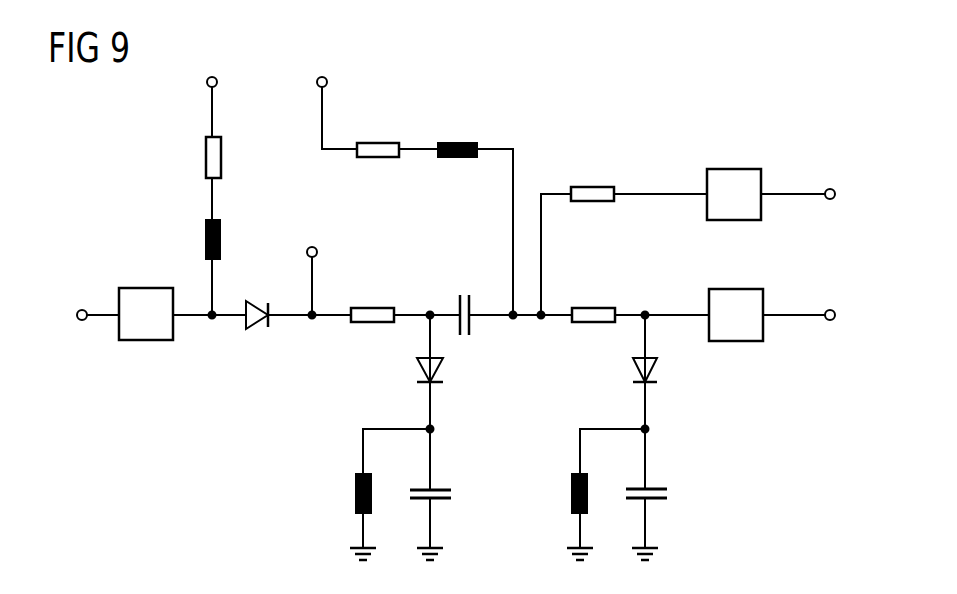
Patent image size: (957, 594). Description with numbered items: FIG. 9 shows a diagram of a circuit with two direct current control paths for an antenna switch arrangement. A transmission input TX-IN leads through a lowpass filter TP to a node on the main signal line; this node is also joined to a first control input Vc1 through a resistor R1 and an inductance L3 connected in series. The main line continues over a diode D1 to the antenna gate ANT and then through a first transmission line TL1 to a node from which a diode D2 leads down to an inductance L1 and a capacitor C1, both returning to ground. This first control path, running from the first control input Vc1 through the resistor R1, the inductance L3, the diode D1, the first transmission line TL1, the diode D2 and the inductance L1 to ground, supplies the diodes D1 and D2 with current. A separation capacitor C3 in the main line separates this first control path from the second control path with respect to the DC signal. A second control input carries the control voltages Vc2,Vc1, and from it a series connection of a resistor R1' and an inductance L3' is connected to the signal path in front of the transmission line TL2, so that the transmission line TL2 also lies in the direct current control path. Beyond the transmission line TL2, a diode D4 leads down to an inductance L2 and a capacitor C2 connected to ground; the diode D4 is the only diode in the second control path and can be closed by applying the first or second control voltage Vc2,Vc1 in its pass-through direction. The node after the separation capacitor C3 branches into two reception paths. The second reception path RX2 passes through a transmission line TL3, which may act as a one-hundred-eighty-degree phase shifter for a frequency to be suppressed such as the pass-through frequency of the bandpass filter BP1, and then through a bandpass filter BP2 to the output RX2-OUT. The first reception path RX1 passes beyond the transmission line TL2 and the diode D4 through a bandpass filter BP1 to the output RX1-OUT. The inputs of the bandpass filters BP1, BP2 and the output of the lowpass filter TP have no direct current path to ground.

The transmission input TX-IN is at (80, 309).
The lowpass filter TP is at (147, 341).
The first control input Vc1 is at (214, 92).
The resistor R1 is at (184, 178).
The inductance L3 is at (183, 267).
The diode D1 is at (258, 326).
The antenna gate ANT is at (311, 246).
The control voltages Vc2,Vc1 is at (317, 98).
The resistor R1' is at (397, 122).
The inductance L3' is at (475, 201).
The first transmission line TL1 is at (371, 308).
The separation capacitor C3 is at (464, 294).
The diode D2 is at (438, 372).
The capacitor C1 is at (441, 489).
The inductance L1 is at (356, 493).
The second reception path RX2 is at (554, 193).
The transmission line TL3 is at (593, 187).
The bandpass filter BP2 is at (733, 169).
The second reception output RX2-OUT is at (832, 189).
The transmission line TL2 is at (594, 308).
The first reception path RX1 is at (676, 314).
The bandpass filter BP1 is at (735, 342).
The first reception output RX1-OUT is at (832, 310).
The diode D4 is at (653, 372).
The capacitor C2 is at (668, 494).
The inductance L2 is at (572, 495).